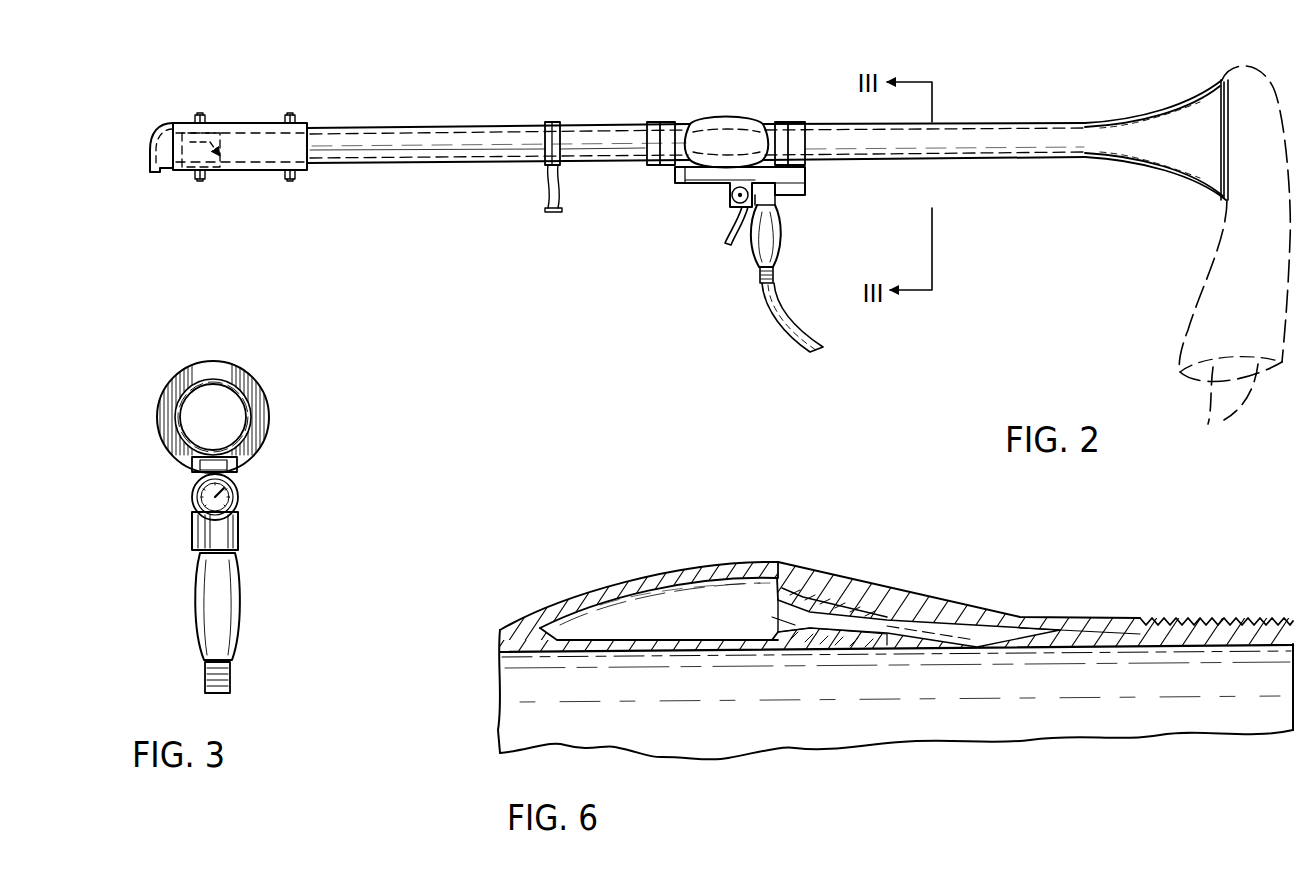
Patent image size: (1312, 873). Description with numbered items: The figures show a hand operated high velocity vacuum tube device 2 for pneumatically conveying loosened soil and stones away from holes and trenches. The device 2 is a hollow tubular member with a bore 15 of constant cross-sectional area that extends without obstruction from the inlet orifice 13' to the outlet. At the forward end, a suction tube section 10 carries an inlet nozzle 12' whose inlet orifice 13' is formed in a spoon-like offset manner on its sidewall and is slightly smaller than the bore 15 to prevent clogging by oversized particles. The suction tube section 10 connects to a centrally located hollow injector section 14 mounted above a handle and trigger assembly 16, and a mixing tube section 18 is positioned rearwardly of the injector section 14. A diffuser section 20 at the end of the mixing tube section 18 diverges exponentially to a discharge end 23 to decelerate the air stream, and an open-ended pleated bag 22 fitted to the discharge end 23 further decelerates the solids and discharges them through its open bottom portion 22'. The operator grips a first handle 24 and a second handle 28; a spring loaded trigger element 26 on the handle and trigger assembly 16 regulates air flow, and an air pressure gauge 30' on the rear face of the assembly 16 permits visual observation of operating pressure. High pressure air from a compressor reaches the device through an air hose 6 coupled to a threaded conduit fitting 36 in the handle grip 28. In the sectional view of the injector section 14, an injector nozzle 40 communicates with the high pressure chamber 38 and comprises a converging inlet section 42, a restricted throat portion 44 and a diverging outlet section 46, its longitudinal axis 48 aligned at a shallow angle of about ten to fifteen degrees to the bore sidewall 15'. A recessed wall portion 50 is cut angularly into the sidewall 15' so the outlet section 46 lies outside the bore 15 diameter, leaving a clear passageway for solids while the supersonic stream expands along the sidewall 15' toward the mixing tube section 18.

In FIG. 2, the high velocity vacuum tube device 2 is at (990, 102).
In FIG. 3, the high velocity vacuum tube device 2 is at (163, 378).
In FIG. 2, the air hose 6 is at (773, 317).
In FIG. 2, the suction tube section 10 is at (350, 125).
In FIG. 2, the inlet nozzle 12' is at (240, 129).
In FIG. 2, the inlet orifice 13' is at (178, 172).
In FIG. 2, the injector section 14 is at (727, 118).
In FIG. 3, the injector section 14 is at (250, 377).
In FIG. 6, the injector section 14 is at (875, 575).
In FIG. 2, the bore 15 is at (723, 107).
In FIG. 3, the bore 15 is at (213, 417).
In FIG. 6, the bore 15 is at (895, 695).
In FIG. 6, the bore sidewall 15' is at (1199, 656).
In FIG. 2, the handle and trigger assembly 16 is at (712, 188).
In FIG. 3, the handle and trigger assembly 16 is at (188, 530).
In FIG. 2, the mixing tube section 18 is at (990, 148).
In FIG. 3, the mixing tube section 18 is at (253, 405).
In FIG. 2, the diffuser section 20 is at (1193, 173).
In FIG. 2, the bag 22 is at (1205, 224).
In FIG. 2, the open bottom portion 22' is at (1222, 425).
In FIG. 2, the discharge end 23 is at (1222, 80).
In FIG. 2, the first handle 24 is at (558, 188).
In FIG. 2, the trigger element 26 is at (727, 240).
In FIG. 2, the second handle 28 is at (774, 238).
In FIG. 3, the second handle 28 is at (205, 627).
In FIG. 2, the air pressure gauge 30' is at (805, 188).
In FIG. 3, the air pressure gauge 30' is at (255, 497).
In FIG. 2, the threaded conduit fitting 36 is at (774, 273).
In FIG. 3, the threaded conduit fitting 36 is at (205, 680).
In FIG. 6, the high pressure chamber 38 is at (664, 622).
In FIG. 6, the injector nozzle 40 is at (800, 585).
In FIG. 6, the converging inlet section 42 is at (772, 617).
In FIG. 6, the restricted throat portion 44 is at (818, 627).
In FIG. 6, the diverging outlet section 46 is at (887, 626).
In FIG. 6, the longitudinal axis 48 is at (920, 635).
In FIG. 6, the recessed wall portion 50 is at (1035, 632).